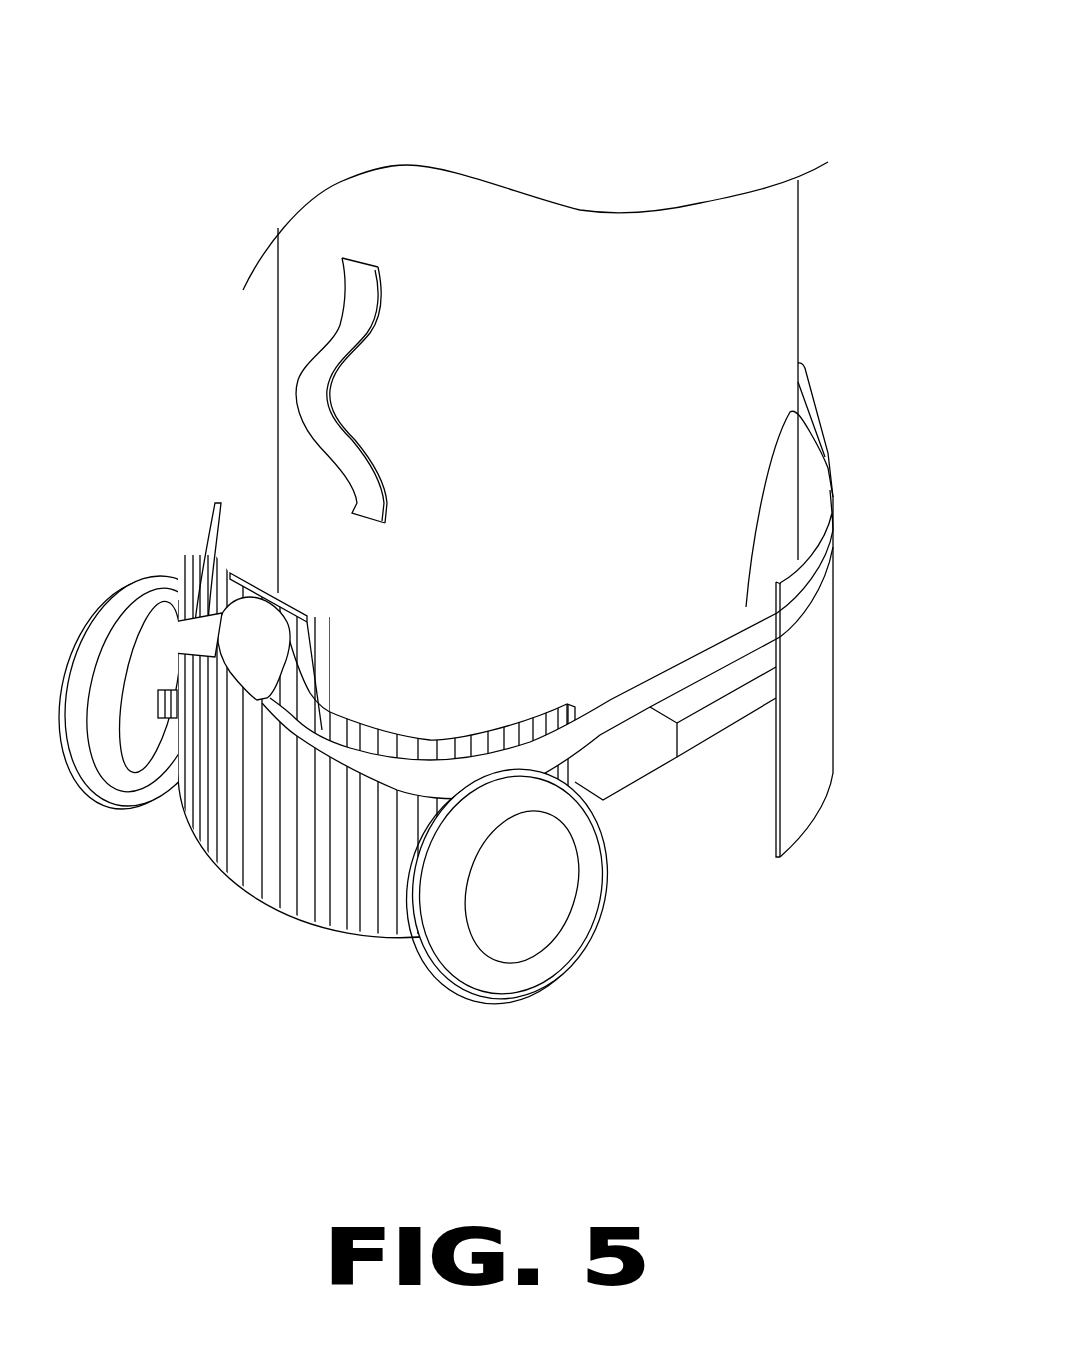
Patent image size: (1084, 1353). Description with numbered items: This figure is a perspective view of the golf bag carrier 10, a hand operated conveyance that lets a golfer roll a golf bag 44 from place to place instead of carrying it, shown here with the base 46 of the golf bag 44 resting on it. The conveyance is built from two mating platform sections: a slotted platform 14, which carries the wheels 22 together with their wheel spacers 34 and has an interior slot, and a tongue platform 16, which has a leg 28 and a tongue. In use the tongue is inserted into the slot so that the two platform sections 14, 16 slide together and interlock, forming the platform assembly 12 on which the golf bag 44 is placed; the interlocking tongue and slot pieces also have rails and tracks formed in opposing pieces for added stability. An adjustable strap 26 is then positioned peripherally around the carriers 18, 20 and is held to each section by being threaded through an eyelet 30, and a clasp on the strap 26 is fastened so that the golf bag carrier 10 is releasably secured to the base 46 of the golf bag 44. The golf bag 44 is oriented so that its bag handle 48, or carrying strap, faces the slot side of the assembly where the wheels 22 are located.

The golf bag carrier 10 is at (840, 122).
The platform assembly 12 is at (691, 876).
The slotted platform 14 is at (617, 793).
The tongue platform 16 is at (725, 727).
The carrier 18 is at (210, 520).
The carrier 20 is at (815, 700).
The wheels 22 is at (147, 602).
The adjustable strap 26 is at (697, 657).
The leg 28 is at (797, 830).
The eyelet 30 is at (247, 700).
The wheel spacers 34 is at (163, 700).
The golf bag 44 is at (798, 297).
The base 46 is at (825, 457).
The bag handle 48 is at (297, 387).